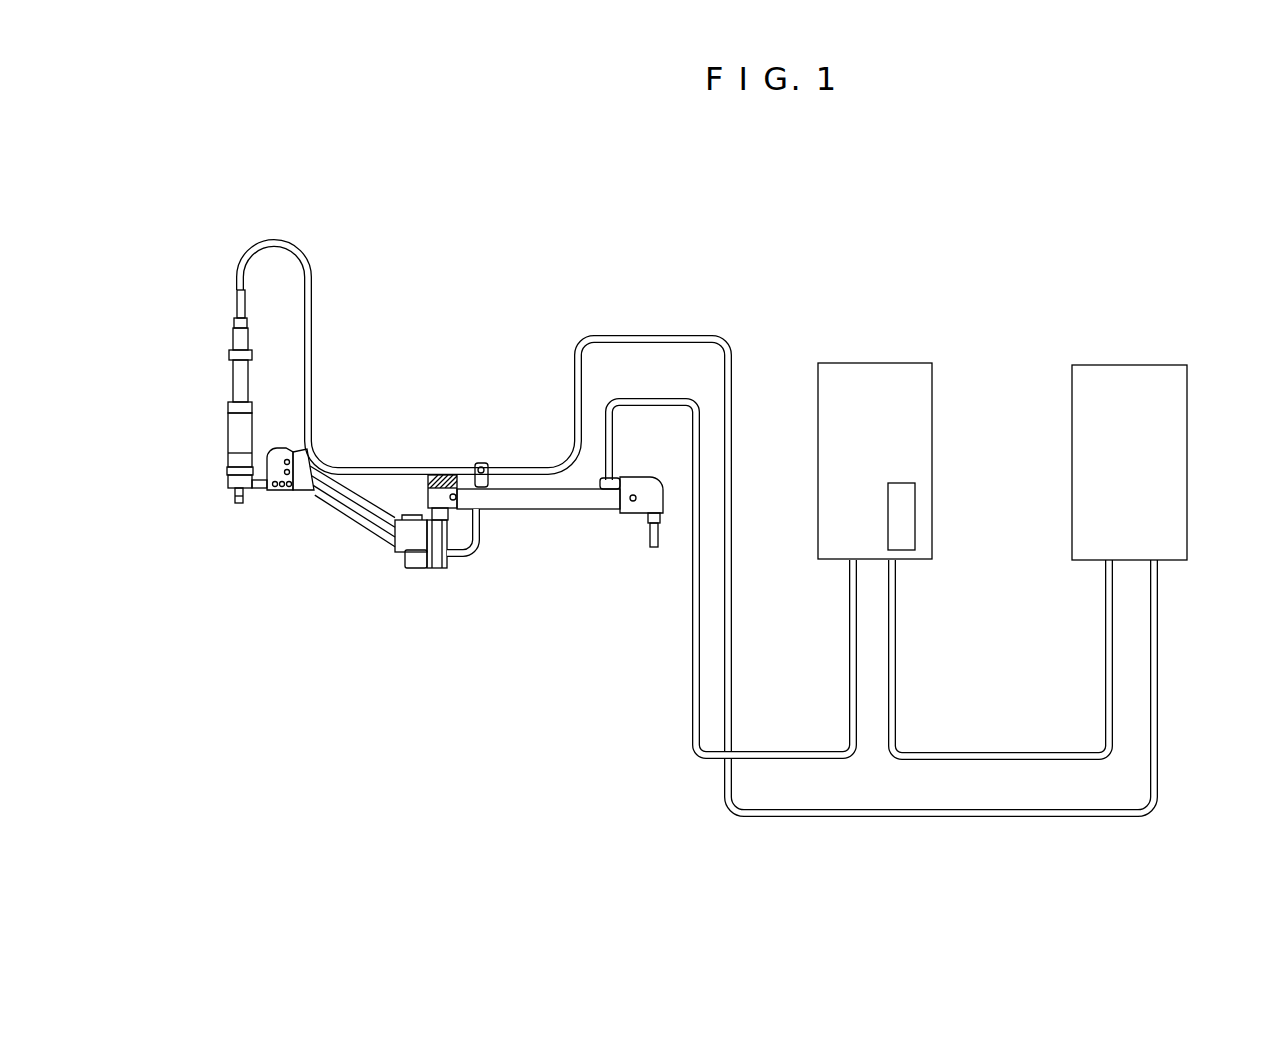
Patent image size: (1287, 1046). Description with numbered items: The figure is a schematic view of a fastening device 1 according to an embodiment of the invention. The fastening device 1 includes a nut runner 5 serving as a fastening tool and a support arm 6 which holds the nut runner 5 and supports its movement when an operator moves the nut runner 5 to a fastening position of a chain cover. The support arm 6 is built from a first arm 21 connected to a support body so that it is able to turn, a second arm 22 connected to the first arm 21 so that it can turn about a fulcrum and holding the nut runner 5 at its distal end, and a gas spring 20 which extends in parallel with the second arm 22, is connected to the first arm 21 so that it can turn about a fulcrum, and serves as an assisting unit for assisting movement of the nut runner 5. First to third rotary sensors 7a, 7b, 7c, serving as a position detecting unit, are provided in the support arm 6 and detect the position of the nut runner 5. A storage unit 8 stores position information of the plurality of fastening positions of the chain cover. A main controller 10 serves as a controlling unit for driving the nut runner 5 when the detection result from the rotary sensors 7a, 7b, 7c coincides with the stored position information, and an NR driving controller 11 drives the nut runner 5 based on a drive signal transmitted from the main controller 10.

The fastening device 1 is at (1191, 264).
The nut runner 5 is at (210, 429).
The support arm 6 is at (440, 579).
The first rotary sensor 7a is at (648, 482).
The second rotary sensor 7b is at (443, 483).
The third rotary sensor 7c is at (417, 563).
The storage unit 8 is at (901, 513).
The main controller 10 is at (888, 390).
The NR driving controller 11 is at (1165, 427).
The gas spring 20 is at (323, 488).
The first arm 21 is at (541, 497).
The second arm 22 is at (337, 518).